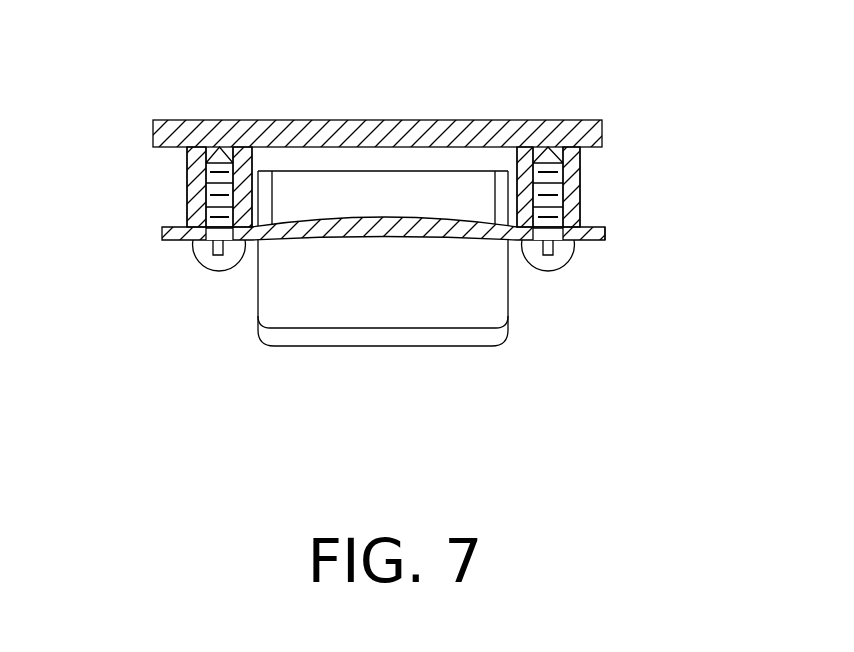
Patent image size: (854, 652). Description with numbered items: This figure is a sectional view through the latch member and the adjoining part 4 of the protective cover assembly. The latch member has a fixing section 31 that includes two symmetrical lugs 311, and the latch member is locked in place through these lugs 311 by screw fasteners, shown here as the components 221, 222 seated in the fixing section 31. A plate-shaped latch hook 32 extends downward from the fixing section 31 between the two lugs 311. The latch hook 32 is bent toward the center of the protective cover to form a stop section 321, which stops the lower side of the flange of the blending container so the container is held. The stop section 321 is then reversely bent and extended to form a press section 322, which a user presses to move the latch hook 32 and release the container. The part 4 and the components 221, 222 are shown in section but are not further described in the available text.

The frame plate 4 is at (203, 119).
The screw housing 221 is at (197, 183).
The screw 222 is at (560, 250).
The fixing section 31 is at (450, 220).
The lugs 311 is at (587, 240).
The latch hook 32 is at (240, 296).
The stop section 321 is at (393, 182).
The press section 322 is at (382, 281).